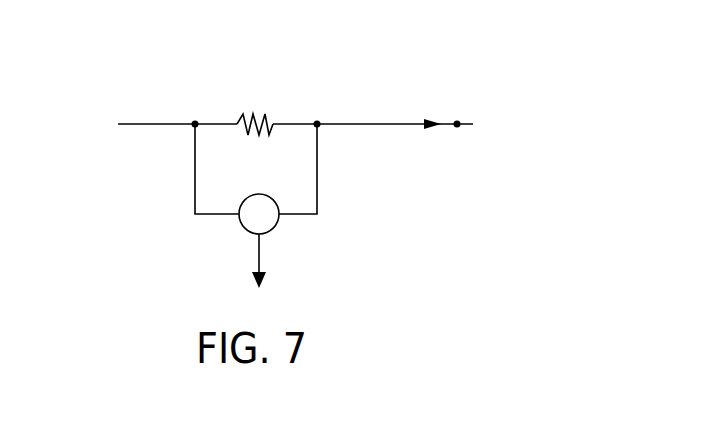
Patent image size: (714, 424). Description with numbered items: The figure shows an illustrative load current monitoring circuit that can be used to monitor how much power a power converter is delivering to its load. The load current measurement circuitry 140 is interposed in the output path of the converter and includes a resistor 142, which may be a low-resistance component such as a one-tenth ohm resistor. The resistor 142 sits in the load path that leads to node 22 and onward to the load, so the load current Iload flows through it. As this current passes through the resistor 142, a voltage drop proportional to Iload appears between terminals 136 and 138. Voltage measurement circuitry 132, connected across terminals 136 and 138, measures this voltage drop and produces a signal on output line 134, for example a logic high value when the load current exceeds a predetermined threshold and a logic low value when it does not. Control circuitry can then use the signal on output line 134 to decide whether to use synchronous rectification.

The node 22 is at (457, 122).
The voltage measurement circuitry 132 is at (240, 227).
The output line 134 is at (262, 248).
The terminal 136 is at (195, 122).
The terminal 138 is at (317, 122).
The load current measurement circuitry 140 is at (250, 162).
The resistor 142 is at (250, 96).